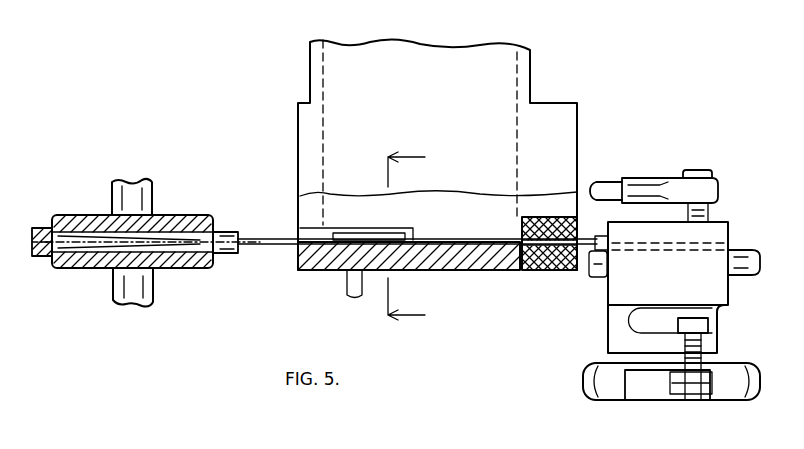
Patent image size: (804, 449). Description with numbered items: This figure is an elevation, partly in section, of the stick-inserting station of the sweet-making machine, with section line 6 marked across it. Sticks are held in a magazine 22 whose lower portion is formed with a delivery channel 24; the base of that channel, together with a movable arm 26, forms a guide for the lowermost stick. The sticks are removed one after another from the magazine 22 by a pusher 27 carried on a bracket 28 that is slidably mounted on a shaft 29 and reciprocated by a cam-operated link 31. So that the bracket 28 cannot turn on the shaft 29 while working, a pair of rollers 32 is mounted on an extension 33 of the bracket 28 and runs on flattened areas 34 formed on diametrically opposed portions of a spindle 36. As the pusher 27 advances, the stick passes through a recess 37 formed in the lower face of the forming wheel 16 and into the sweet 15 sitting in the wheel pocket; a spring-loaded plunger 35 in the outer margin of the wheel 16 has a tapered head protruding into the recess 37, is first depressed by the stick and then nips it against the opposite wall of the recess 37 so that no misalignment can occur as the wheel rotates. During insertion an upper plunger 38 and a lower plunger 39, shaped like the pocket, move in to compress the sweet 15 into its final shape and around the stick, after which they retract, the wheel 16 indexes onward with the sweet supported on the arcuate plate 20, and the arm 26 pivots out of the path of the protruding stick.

The section line 6 is at (415, 236).
The sweet 15 is at (82, 240).
The forming wheel 16 is at (40, 229).
The arcuate plate 20 is at (43, 268).
The magazine 22 is at (313, 129).
The delivery channel 24 is at (472, 258).
The movable arm 26 is at (342, 238).
The pusher 27 is at (452, 242).
The bracket 28 is at (707, 237).
The shaft 29 is at (596, 270).
The cam-operated link 31 is at (605, 188).
The rollers 32 is at (705, 372).
The extension 33 is at (620, 322).
The flattened areas 34 is at (645, 385).
The plunger 35 is at (230, 256).
The spindle 36 is at (605, 375).
The recess 37 is at (226, 232).
The upper plunger 38 is at (180, 227).
The lower plunger 39 is at (180, 258).